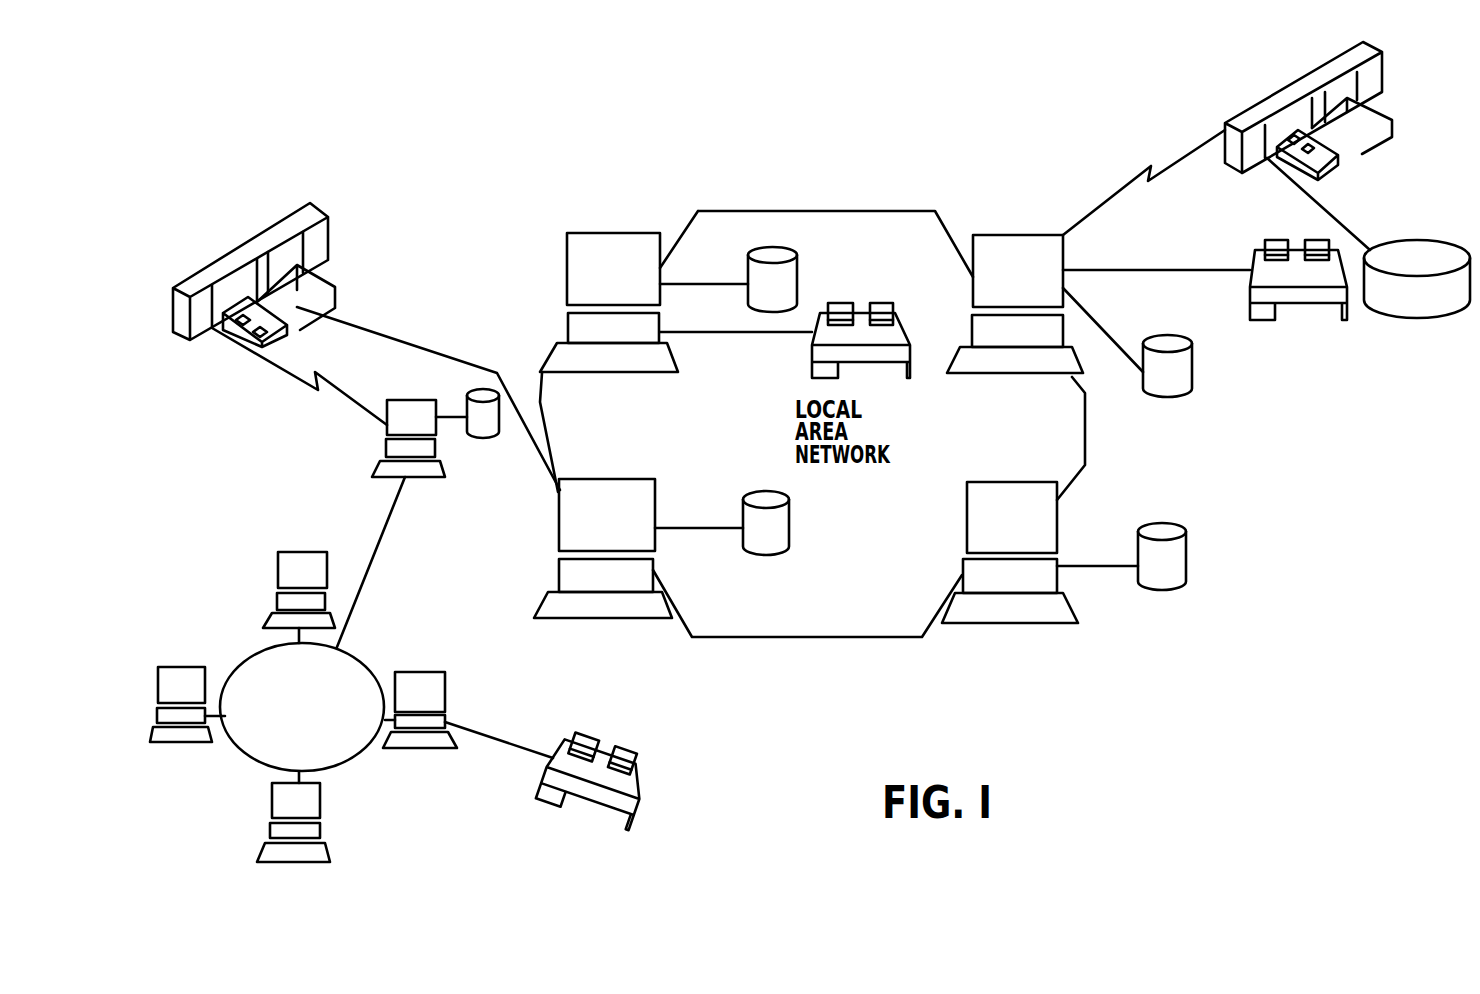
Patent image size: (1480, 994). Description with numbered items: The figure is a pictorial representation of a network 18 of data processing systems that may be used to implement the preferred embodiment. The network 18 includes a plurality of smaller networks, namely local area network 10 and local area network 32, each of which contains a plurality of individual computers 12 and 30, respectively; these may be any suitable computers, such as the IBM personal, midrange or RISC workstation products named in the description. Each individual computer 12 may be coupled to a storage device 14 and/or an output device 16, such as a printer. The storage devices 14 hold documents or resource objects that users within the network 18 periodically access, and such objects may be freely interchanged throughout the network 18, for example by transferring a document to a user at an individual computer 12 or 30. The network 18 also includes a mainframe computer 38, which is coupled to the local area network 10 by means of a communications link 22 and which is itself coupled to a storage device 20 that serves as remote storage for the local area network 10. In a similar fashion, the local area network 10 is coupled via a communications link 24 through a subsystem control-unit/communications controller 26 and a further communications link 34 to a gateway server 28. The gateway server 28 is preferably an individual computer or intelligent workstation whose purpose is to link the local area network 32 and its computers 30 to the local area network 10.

The local area network 10 is at (830, 638).
The individual computer 12 is at (623, 233).
The storage device 14 is at (798, 267).
The output device 16 is at (862, 315).
The network 18 is at (852, 175).
The storage device 20 is at (1433, 252).
The communications link 22 is at (1183, 158).
The communications link 24 is at (420, 348).
The subsystem control-unit/communications controller 26 is at (322, 212).
The gateway server 28 is at (413, 400).
The individual computer 30 is at (299, 552).
The local area network 32 is at (245, 755).
The communications link 34 is at (338, 393).
The mainframe computer 38 is at (1298, 87).